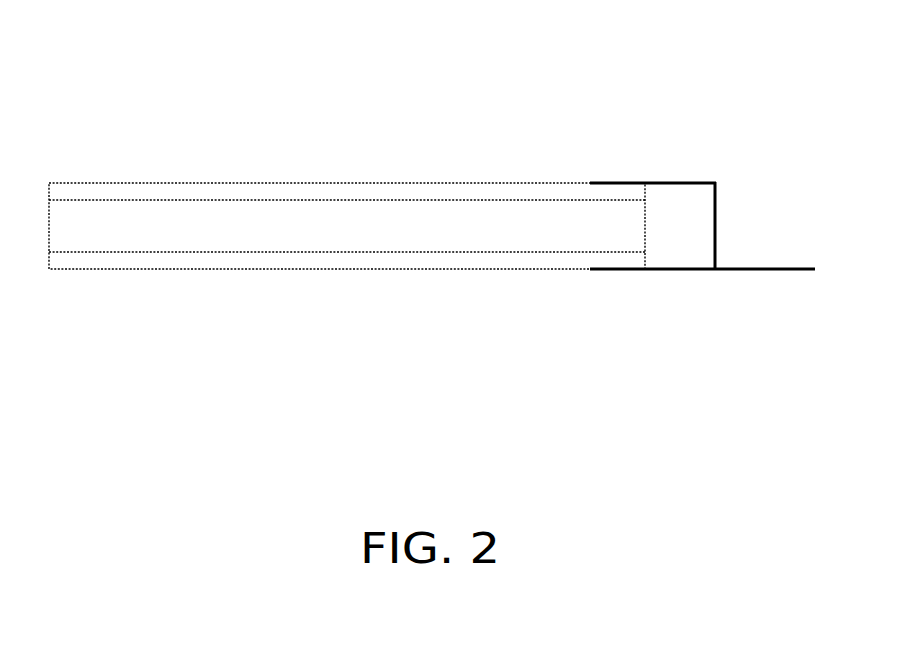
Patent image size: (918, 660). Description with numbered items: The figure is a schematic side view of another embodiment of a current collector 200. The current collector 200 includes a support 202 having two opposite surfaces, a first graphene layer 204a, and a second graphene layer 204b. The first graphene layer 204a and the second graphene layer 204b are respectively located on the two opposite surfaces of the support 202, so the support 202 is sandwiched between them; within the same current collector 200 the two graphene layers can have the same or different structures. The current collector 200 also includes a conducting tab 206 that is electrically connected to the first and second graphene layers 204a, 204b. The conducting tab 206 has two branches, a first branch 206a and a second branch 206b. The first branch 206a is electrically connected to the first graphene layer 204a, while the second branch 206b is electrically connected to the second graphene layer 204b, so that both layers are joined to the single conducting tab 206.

The current collector 200 is at (429, 66).
The support 202 is at (283, 223).
The first graphene layer 204a is at (148, 192).
The second graphene layer 204b is at (157, 262).
The conducting tab 206 is at (793, 270).
The first branch 206a is at (716, 213).
The second branch 206b is at (678, 270).